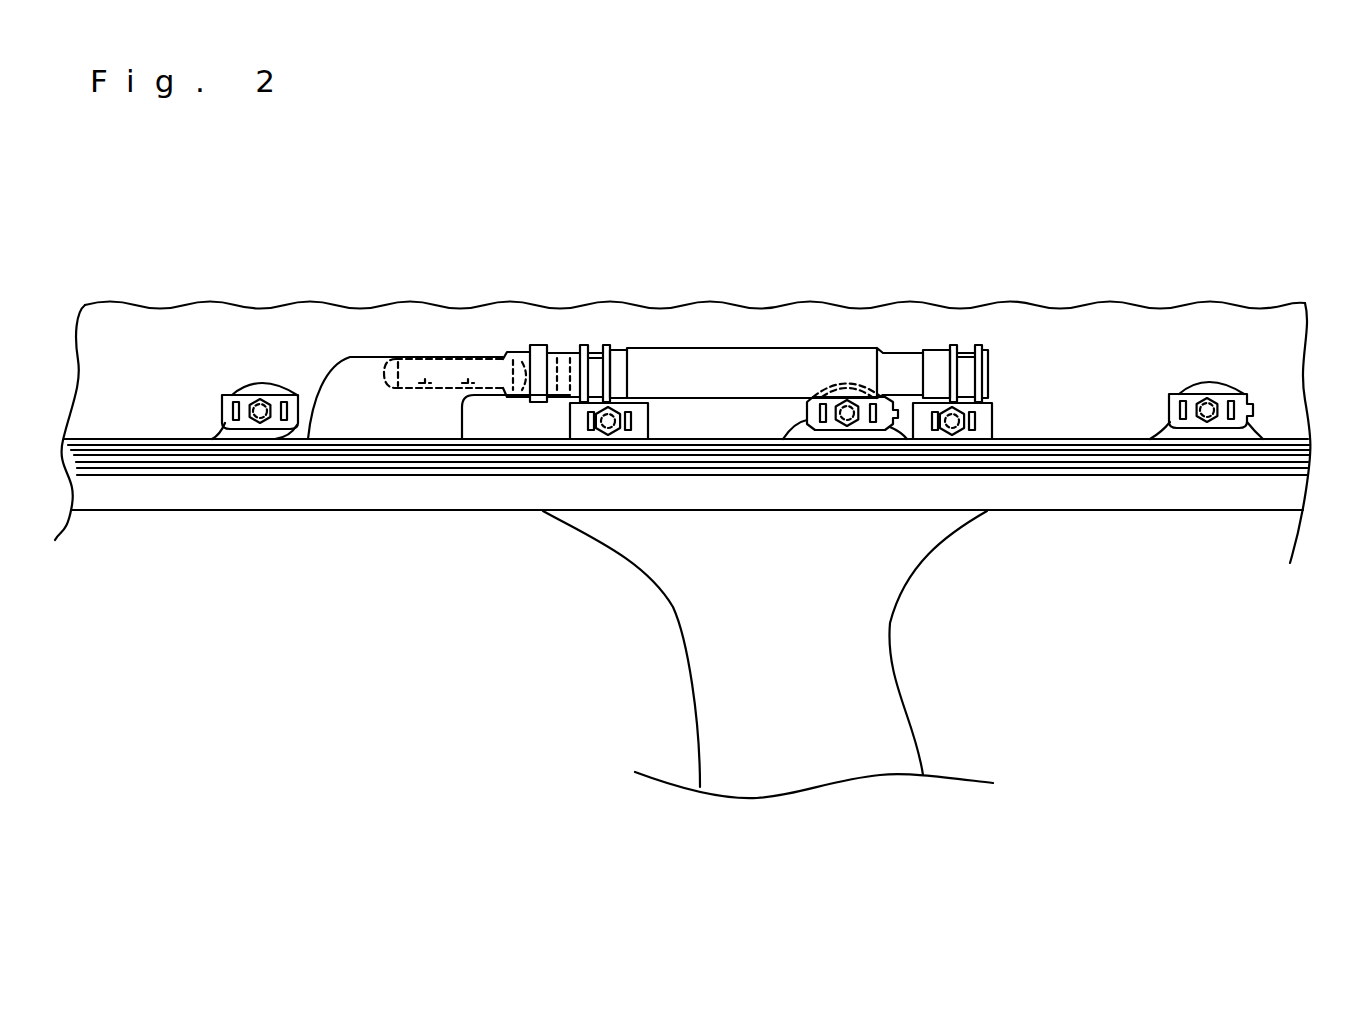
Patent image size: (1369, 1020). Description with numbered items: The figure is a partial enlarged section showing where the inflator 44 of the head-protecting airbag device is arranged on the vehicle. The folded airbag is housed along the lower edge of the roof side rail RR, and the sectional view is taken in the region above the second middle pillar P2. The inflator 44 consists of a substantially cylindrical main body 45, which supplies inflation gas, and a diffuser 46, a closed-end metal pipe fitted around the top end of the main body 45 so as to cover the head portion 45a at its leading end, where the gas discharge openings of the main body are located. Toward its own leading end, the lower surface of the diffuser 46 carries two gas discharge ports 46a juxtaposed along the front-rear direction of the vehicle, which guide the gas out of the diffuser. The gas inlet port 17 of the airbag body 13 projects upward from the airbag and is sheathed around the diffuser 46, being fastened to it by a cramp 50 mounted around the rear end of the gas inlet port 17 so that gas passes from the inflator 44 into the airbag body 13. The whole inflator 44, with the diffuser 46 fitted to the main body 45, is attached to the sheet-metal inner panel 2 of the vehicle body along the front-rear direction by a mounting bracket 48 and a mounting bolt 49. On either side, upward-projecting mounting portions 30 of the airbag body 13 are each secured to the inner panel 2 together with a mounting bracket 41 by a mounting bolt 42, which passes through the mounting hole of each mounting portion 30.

The inner panel 2 is at (1052, 330).
The airbag body 13 is at (1158, 472).
The gas inlet port 17 is at (357, 368).
The mounting portion 30 is at (245, 383).
The mounting bracket 41 is at (223, 410).
The mounting bolt 42 is at (258, 415).
The inflator 44 is at (785, 340).
The main body 45 is at (700, 348).
The head portion 45a is at (565, 348).
The diffuser 46 is at (472, 360).
The gas discharge ports 46a is at (468, 386).
The mounting bracket 48 is at (596, 345).
The mounting bolt 49 is at (608, 421).
The cramp 50 is at (540, 347).
The second middle pillar P2 is at (695, 720).
The roof side rail RR is at (172, 511).